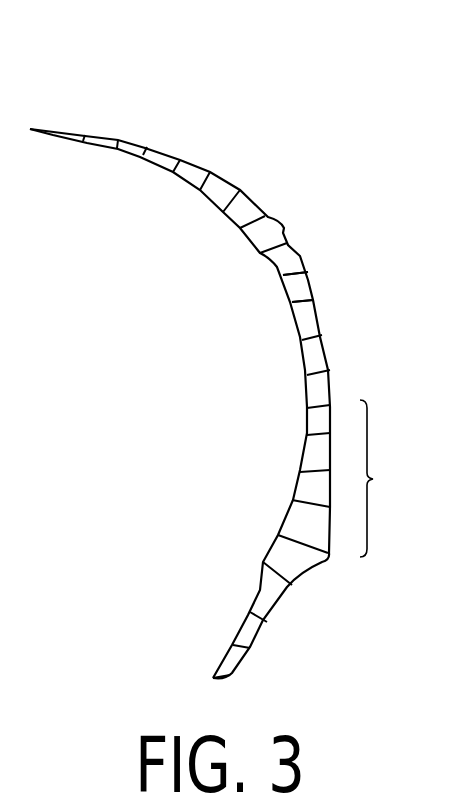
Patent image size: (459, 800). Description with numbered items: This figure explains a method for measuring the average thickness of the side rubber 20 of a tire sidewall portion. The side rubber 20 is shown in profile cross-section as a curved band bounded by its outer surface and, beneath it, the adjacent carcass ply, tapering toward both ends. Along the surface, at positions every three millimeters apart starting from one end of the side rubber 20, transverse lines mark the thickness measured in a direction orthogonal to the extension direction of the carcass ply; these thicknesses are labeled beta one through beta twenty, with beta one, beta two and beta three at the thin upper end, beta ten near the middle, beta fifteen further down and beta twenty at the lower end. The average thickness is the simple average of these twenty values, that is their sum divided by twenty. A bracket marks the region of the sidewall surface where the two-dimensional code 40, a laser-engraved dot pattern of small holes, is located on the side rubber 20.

The side rubber 20 is at (298, 280).
The two-dimensional code 40 is at (387, 478).